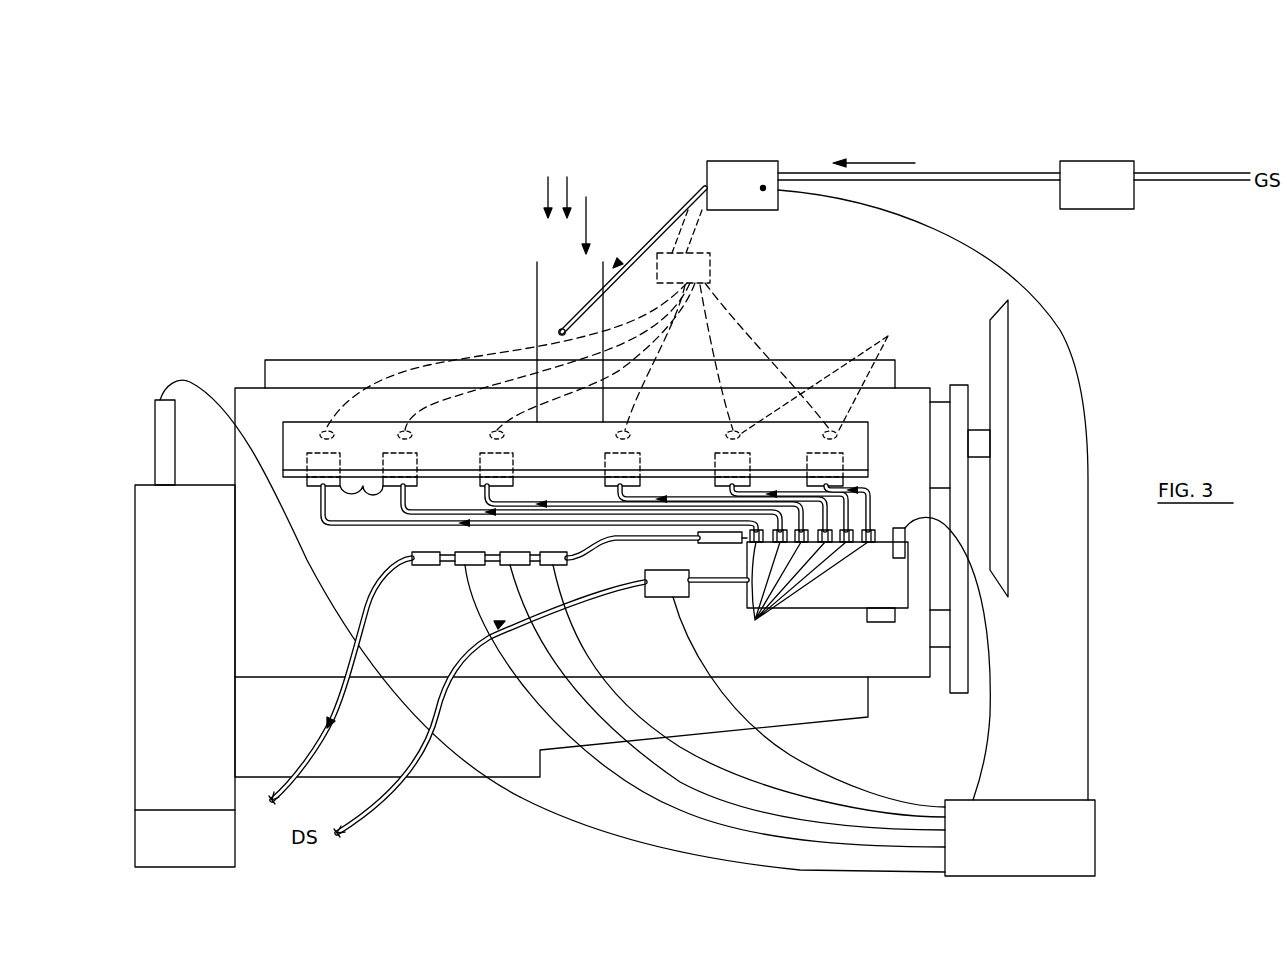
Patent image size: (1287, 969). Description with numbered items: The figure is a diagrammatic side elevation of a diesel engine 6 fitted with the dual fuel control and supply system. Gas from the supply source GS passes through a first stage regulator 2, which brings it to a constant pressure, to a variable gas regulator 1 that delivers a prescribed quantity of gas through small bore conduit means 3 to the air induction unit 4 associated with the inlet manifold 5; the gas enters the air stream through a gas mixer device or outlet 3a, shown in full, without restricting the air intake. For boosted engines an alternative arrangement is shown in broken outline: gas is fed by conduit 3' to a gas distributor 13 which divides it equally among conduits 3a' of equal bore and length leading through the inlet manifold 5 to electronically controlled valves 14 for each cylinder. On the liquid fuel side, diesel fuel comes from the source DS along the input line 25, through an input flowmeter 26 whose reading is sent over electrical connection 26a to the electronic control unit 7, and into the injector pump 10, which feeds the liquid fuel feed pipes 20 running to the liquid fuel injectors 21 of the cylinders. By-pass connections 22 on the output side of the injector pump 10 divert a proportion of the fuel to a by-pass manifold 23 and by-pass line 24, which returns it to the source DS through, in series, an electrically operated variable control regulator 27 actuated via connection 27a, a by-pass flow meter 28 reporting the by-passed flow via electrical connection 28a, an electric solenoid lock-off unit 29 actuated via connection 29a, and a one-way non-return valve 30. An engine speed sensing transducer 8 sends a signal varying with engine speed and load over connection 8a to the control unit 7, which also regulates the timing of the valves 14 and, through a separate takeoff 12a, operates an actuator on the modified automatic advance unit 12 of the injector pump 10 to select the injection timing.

The variable gas regulator 1 is at (781, 166).
The first stage regulator 2 is at (1112, 161).
The conduit means 3 is at (904, 236).
The conduit 3' is at (716, 231).
The gas mixer device or outlet 3a is at (566, 249).
The conduits 3a' is at (578, 356).
The air induction unit 4 is at (537, 318).
The inlet manifold 5 is at (395, 432).
The engine 6 is at (815, 355).
The electronic control unit 7 is at (1020, 838).
The engine speed sensing transducer 8 is at (155, 445).
The connection 8a is at (587, 830).
The injector pump 10 is at (806, 598).
The automatic advance unit 12 is at (905, 528).
The separate takeoff 12a is at (990, 715).
The gas distributor 13 is at (712, 264).
The electronically controlled valves 14 is at (827, 372).
The liquid fuel feed pipes 20 is at (407, 520).
The liquid fuel injectors 21 is at (363, 487).
The by-pass connections 22 is at (809, 590).
The by-pass manifold 23 is at (720, 543).
The by-pass line 24 is at (605, 546).
The liquid diesel fuel input line 25 is at (387, 803).
The input flowmeter 26 is at (666, 597).
The electrical connection 26a is at (813, 767).
The variable control regulator 27 is at (556, 566).
The connection 27a is at (630, 707).
The by-pass flow meter 28 is at (520, 565).
The electrical connection 28a is at (680, 783).
The electric solenoid lock-off unit 29 is at (470, 565).
The connection 29a is at (590, 763).
The non-return valve 30 is at (430, 565).